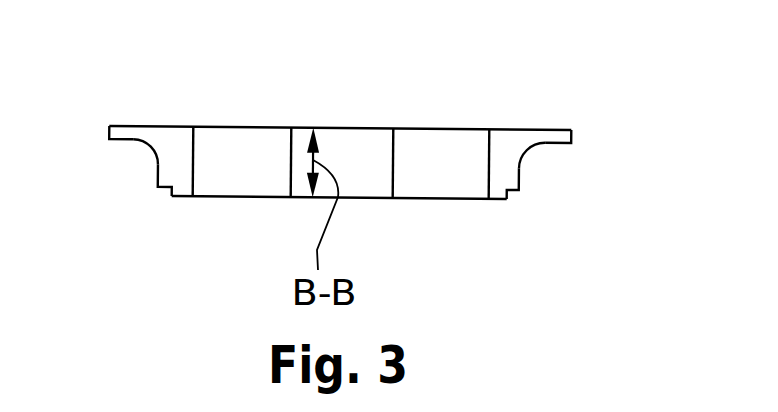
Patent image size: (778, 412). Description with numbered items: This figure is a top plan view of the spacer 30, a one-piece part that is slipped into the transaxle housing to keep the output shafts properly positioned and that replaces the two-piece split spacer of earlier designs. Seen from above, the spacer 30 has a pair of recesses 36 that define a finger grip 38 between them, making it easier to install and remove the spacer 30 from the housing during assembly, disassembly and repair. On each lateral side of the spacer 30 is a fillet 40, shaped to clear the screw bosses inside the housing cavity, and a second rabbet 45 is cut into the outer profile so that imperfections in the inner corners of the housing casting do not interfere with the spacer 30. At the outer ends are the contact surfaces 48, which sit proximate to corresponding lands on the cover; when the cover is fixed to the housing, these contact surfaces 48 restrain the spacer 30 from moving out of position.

The spacer 30 is at (610, 178).
The recesses 36 is at (247, 148).
The finger grip 38 is at (341, 122).
The fillets 40 is at (158, 170).
The second rabbet 45 is at (168, 201).
The contact surfaces 48 is at (158, 139).